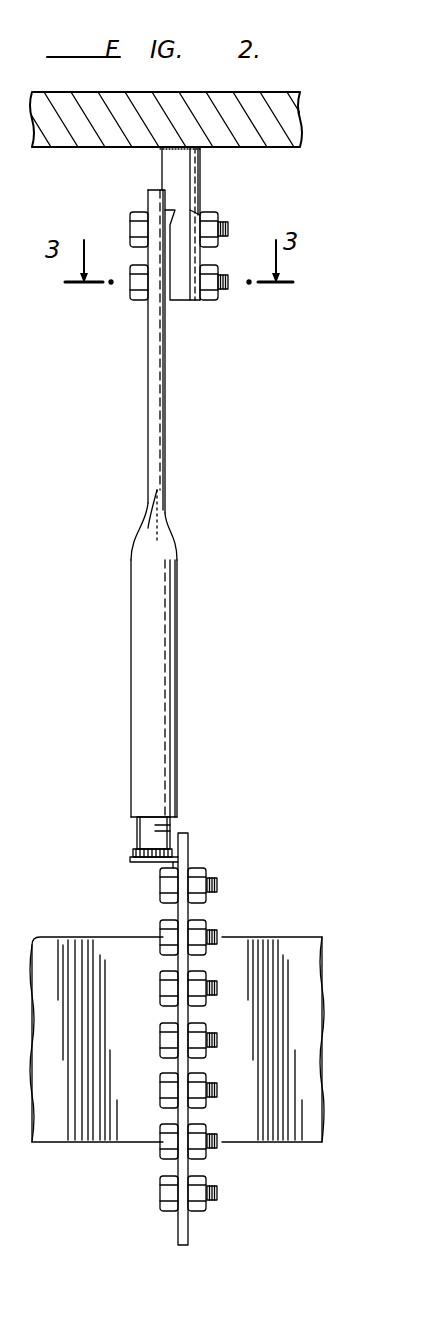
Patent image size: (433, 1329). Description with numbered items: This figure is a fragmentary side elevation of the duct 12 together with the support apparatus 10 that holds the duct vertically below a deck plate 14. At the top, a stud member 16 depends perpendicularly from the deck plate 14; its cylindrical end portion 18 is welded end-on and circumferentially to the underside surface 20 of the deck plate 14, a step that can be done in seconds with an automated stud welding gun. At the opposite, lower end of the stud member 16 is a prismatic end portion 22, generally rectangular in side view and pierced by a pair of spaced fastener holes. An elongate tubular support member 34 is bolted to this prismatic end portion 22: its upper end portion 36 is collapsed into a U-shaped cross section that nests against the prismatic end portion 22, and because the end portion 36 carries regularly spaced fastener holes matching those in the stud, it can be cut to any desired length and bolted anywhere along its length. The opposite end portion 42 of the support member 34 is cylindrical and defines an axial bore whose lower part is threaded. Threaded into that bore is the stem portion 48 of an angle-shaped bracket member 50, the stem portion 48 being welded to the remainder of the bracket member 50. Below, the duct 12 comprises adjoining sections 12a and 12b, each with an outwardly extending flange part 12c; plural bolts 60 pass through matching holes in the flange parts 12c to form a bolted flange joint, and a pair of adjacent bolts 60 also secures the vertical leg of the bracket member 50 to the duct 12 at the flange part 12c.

The support apparatus 10 is at (110, 447).
The duct 12 is at (62, 920).
The duct section 12a is at (95, 1140).
The duct section 12b is at (273, 1140).
The flange part 12c is at (192, 856).
The deck plate 14 is at (293, 148).
The stud member 16 is at (212, 168).
The cylindrical end portion 18 is at (162, 172).
The underside surface 20 is at (68, 148).
The prismatic end portion 22 is at (192, 297).
The elongate tubular support member 34 is at (180, 540).
The end portion 36 is at (166, 410).
The opposite end portion 42 is at (173, 668).
The stem portion 48 is at (138, 828).
The bracket member 50 is at (126, 857).
The bolts 60 is at (162, 1178).